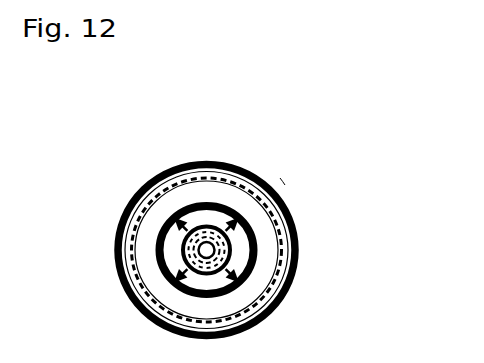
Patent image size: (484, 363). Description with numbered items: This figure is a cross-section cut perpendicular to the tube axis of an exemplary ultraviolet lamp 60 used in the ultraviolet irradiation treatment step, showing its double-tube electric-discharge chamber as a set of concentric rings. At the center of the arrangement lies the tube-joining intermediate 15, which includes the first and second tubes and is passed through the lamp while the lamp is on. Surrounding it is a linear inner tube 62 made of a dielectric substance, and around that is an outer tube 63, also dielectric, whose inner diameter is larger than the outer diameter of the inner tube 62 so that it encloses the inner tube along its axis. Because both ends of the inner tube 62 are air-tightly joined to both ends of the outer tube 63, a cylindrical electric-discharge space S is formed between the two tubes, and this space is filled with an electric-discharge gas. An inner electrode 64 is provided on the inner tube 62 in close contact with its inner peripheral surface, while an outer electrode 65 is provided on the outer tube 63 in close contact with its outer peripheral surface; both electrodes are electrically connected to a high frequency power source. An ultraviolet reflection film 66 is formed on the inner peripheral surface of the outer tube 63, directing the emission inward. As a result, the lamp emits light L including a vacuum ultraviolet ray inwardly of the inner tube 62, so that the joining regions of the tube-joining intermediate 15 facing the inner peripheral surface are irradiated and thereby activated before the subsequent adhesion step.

The ultraviolet lamp 60 is at (299, 212).
The outer electrode 65 is at (145, 187).
The outer tube 63 is at (140, 203).
The ultraviolet reflection film 66 is at (140, 222).
The tube-joining intermediate 15 is at (252, 262).
The inner tube 62 is at (135, 268).
The inner electrode 64 is at (150, 288).
The electric-discharge space S is at (285, 184).
The light L is at (162, 210).